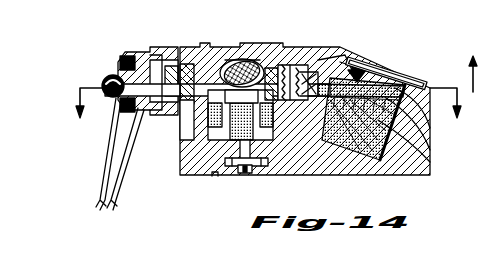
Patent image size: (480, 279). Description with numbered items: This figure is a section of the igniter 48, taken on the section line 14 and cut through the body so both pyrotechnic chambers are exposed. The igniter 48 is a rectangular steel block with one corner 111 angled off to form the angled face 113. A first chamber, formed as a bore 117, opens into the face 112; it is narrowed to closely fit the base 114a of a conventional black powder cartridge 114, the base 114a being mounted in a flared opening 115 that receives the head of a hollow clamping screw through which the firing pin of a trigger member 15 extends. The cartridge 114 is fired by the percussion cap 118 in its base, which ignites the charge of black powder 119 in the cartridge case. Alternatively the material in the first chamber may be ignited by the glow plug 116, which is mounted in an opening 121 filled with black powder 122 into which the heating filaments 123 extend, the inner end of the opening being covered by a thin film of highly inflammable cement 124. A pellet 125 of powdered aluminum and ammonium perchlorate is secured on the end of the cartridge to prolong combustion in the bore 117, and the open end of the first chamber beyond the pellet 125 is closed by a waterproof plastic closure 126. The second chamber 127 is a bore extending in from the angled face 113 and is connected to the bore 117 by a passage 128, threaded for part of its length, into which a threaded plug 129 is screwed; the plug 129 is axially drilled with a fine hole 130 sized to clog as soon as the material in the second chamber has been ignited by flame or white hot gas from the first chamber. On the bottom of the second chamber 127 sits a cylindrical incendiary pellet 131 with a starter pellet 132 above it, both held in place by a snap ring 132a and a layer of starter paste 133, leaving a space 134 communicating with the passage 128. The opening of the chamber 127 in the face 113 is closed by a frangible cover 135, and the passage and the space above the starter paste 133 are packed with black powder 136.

The section line 14 is at (474, 64).
The trigger member 15 is at (270, 108).
The igniter 48 is at (412, 175).
The angled corner 111 is at (350, 62).
The face 112 is at (286, 62).
The angled face 113 is at (338, 66).
The black powder cartridge 114 is at (250, 174).
The cartridge base 114a is at (210, 178).
The flared opening 115 is at (262, 176).
The glow plug 116 is at (157, 52).
The bore 117 is at (262, 68).
The percussion cap 118 is at (248, 170).
The black powder 119 is at (184, 165).
The opening 121 is at (190, 141).
The black powder 122 is at (187, 62).
The heating filaments 123 is at (160, 54).
The inflammable cement film 124 is at (242, 60).
The pellet 125 is at (234, 62).
The waterproof plastic closure 126 is at (248, 50).
The second chamber 127 is at (362, 68).
The passage 128 is at (253, 64).
The threaded plug 129 is at (302, 62).
The fine hole 130 is at (332, 60).
The incendiary pellet 131 is at (400, 150).
The starter pellet 132 is at (412, 132).
The snap ring 132a is at (410, 112).
The starter paste 133 is at (412, 80).
The space 134 is at (364, 66).
The frangible cover 135 is at (400, 72).
The black powder 136 is at (320, 176).